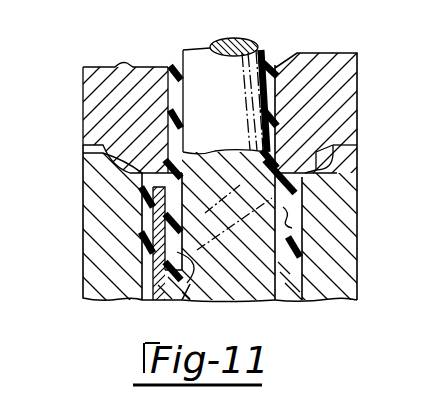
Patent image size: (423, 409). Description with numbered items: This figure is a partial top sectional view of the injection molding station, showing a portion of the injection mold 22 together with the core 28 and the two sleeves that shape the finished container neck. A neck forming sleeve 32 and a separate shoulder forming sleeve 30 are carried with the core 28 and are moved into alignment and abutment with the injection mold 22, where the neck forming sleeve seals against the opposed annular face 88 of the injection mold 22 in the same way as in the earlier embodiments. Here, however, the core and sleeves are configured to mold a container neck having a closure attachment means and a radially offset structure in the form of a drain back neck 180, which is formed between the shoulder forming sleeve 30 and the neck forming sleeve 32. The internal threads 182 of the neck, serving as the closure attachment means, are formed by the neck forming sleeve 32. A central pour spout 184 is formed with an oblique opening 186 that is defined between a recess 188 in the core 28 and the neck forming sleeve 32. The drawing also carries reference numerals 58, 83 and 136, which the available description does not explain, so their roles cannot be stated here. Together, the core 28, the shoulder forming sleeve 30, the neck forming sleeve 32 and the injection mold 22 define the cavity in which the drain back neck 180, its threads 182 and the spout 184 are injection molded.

The injection mold 22 is at (357, 62).
The core 28 is at (241, 123).
The shoulder forming sleeve 30 is at (84, 188).
The neck forming sleeve 32 is at (293, 299).
The valve stem 58 is at (186, 82).
The groove 83 is at (140, 173).
The annular face of injection mold 88 is at (343, 180).
The shoulder 136 is at (357, 145).
The drain back neck 180 is at (300, 205).
The internal threads 182 is at (88, 322).
The pour spout 184 is at (152, 283).
The oblique opening 186 is at (219, 241).
The recess 188 is at (110, 298).